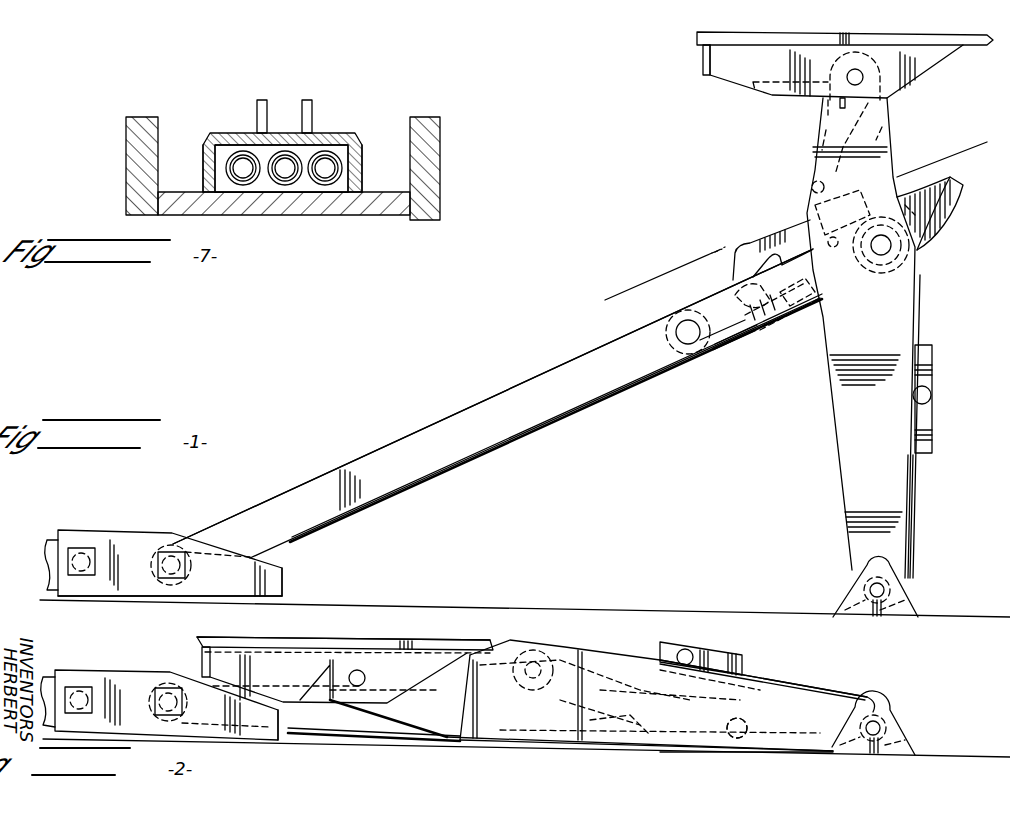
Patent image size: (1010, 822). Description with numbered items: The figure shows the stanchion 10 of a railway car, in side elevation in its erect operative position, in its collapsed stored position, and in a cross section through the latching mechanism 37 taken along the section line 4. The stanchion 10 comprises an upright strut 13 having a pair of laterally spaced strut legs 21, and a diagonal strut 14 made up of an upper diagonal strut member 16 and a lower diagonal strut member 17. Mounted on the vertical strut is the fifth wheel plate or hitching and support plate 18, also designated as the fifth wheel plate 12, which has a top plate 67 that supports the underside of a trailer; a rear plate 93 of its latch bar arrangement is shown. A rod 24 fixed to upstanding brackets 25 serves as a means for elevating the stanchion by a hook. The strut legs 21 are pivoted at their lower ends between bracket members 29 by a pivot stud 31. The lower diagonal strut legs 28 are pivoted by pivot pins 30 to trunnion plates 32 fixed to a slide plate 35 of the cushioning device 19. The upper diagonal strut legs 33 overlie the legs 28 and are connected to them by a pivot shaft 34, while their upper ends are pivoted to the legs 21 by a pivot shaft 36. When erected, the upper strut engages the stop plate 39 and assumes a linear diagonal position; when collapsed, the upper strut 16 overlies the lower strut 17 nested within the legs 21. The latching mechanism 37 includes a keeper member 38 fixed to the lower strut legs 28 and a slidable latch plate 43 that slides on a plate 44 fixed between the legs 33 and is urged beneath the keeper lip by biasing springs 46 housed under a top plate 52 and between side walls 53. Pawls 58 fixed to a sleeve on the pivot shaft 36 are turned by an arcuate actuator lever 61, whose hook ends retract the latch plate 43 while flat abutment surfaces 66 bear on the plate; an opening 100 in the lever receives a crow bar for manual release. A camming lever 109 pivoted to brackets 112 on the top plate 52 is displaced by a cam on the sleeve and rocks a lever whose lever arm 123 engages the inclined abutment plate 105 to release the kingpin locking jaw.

In FIG. 1, the section line 4 is at (633, 318).
In FIG. 1, the stanchion 10 is at (923, 258).
In FIG. 2, the fifth wheel plate or hitching and support plate 12 is at (432, 635).
In FIG. 1, the upright strut 13 is at (920, 515).
In FIG. 2, the upright strut 13 is at (772, 672).
In FIG. 1, the diagonal strut 14 is at (595, 347).
In FIG. 1, the upper diagonal strut member 16 is at (780, 323).
In FIG. 1, the lower diagonal strut member 17 is at (553, 427).
In FIG. 1, the fifth wheel plate or hitching and support plate 18 is at (920, 33).
In FIG. 1, the cushioning device 19 is at (122, 527).
In FIG. 2, the cushioning device 19 is at (102, 667).
In FIG. 1, the strut legs 21 is at (905, 298).
In FIG. 2, the strut legs 21 is at (510, 717).
In FIG. 1, the rod 24 is at (932, 395).
In FIG. 2, the rod 24 is at (686, 650).
In FIG. 1, the upstanding brackets 25 is at (933, 418).
In FIG. 2, the upstanding brackets 25 is at (715, 657).
In FIG. 1, the lower diagonal strut legs 28 is at (380, 468).
In FIG. 2, the lower diagonal strut legs 28 is at (392, 725).
In FIG. 1, the bracket members 29 is at (385, 493).
In FIG. 2, the bracket members 29 is at (347, 733).
In FIG. 1, the pivot pins 30 is at (171, 572).
In FIG. 2, the pivot pins 30 is at (168, 695).
In FIG. 1, the pivot stud 31 is at (883, 590).
In FIG. 2, the pivot stud 31 is at (873, 722).
In FIG. 1, the trunnion plates 32 is at (282, 580).
In FIG. 2, the trunnion plates 32 is at (268, 720).
In FIG. 7, the upper diagonal strut legs 33 is at (126, 142).
In FIG. 2, the upper diagonal strut legs 33 is at (698, 757).
In FIG. 1, the pivot shaft 34 is at (688, 338).
In FIG. 1, the slide plate 35 is at (235, 598).
In FIG. 1, the pivot shaft 36 is at (885, 252).
In FIG. 1, the latching mechanism 37 is at (718, 250).
In FIG. 1, the keeper member 38 is at (730, 287).
In FIG. 2, the keeper member 38 is at (788, 763).
In FIG. 1, the stop plate 39 is at (733, 345).
In FIG. 7, the latch plate 43 is at (342, 185).
In FIG. 1, the latch plate 43 is at (817, 305).
In FIG. 7, the plate 44 is at (345, 210).
In FIG. 7, the biasing springs 46 is at (323, 178).
In FIG. 7, the top plate 52 is at (340, 137).
In FIG. 7, the side walls 53 is at (205, 155).
In FIG. 1, the pawls 58 is at (758, 248).
In FIG. 2, the pawls 58 is at (613, 725).
In FIG. 1, the actuator lever 61 is at (955, 202).
In FIG. 2, the actuator lever 61 is at (503, 650).
In FIG. 1, the abutment surface 66 is at (777, 257).
In FIG. 1, the top plate 67 is at (710, 30).
In FIG. 2, the top plate 67 is at (333, 643).
In FIG. 1, the rear plate 93 is at (705, 60).
In FIG. 2, the rear plate 93 is at (203, 653).
In FIG. 1, the opening 100 is at (757, 92).
In FIG. 1, the inclined abutment plate 105 is at (840, 108).
In FIG. 1, the camming lever 109 is at (912, 212).
In FIG. 7, the brackets 112 is at (257, 107).
In FIG. 1, the lever arm 123 is at (882, 127).